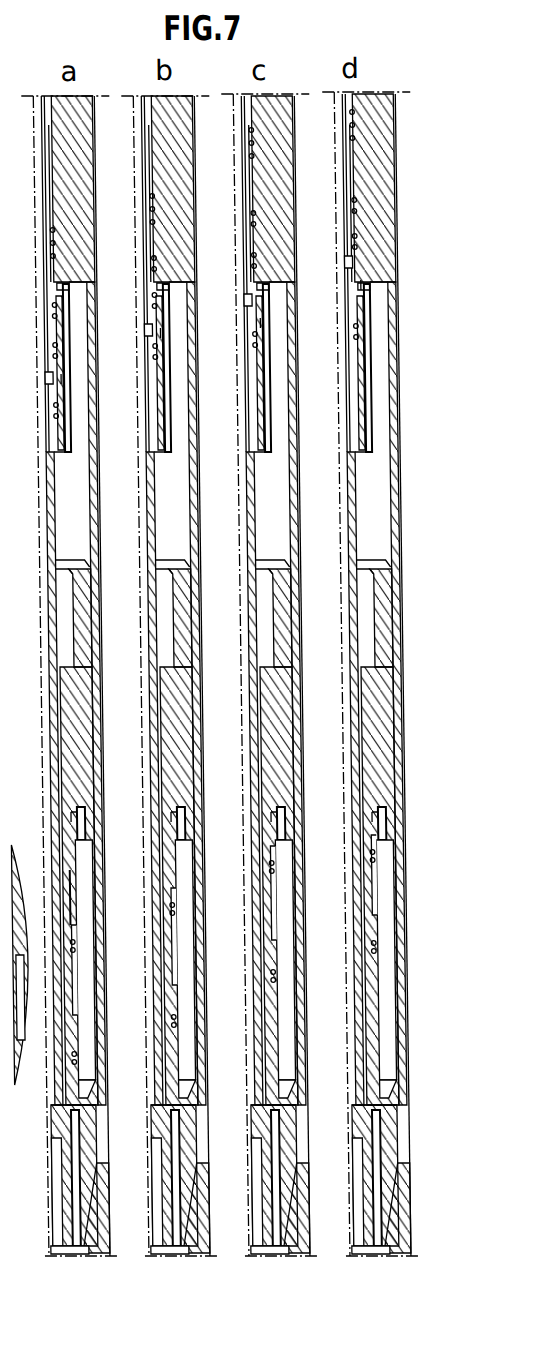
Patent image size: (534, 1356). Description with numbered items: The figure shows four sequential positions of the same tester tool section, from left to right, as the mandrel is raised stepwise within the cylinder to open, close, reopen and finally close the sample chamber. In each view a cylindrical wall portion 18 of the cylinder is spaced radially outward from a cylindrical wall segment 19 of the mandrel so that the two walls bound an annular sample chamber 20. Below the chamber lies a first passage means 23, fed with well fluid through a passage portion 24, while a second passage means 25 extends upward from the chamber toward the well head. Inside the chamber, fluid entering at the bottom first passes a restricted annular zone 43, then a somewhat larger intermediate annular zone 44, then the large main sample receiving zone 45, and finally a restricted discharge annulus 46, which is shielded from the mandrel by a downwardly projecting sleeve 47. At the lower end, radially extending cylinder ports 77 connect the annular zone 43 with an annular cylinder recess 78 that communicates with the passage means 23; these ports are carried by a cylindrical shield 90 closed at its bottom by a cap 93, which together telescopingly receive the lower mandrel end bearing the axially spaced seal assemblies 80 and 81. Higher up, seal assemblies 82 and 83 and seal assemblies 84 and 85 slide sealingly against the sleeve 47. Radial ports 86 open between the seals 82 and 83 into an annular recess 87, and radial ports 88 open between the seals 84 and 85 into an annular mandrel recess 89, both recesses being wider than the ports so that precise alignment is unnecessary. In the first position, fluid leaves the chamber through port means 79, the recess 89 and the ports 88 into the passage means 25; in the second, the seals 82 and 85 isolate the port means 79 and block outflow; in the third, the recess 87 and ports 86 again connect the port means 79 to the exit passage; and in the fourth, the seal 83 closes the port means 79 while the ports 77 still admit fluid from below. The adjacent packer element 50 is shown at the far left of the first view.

In FIG. 7a, the cylindrical wall portion 18 is at (93, 495).
In FIG. 7a, the cylindrical wall segment 19 is at (44, 522).
In FIG. 7a, the sample chamber 20 is at (56, 499).
In FIG. 7b, the sample chamber 20 is at (167, 490).
In FIG. 7c, the sample chamber 20 is at (267, 490).
In FIG. 7d, the sample chamber 20 is at (367, 490).
In FIG. 7a, the first passage means 23 is at (80, 985).
In FIG. 7b, the first passage means 23 is at (200, 960).
In FIG. 7c, the first passage means 23 is at (299, 960).
In FIG. 7d, the first passage means 23 is at (403, 957).
In FIG. 7a, the passage portion 24 is at (60, 1170).
In FIG. 7a, the second passage means 25 is at (38, 118).
In FIG. 7a, the annular zone 43 is at (55, 720).
In FIG. 7b, the annular zone 43 is at (157, 886).
In FIG. 7c, the annular zone 43 is at (294, 886).
In FIG. 7d, the annular zone 43 is at (396, 886).
In FIG. 7a, the intermediate annular zone 44 is at (72, 615).
In FIG. 7b, the intermediate annular zone 44 is at (196, 618).
In FIG. 7c, the intermediate annular zone 44 is at (297, 618).
In FIG. 7d, the intermediate annular zone 44 is at (399, 618).
In FIG. 7a, the main sample receiving zone 45 is at (78, 532).
In FIG. 7b, the main sample receiving zone 45 is at (188, 550).
In FIG. 7c, the main sample receiving zone 45 is at (289, 545).
In FIG. 7d, the main sample receiving zone 45 is at (392, 542).
In FIG. 7a, the discharge annulus 46 is at (87, 410).
In FIG. 7b, the discharge annulus 46 is at (207, 693).
In FIG. 7c, the discharge annulus 46 is at (307, 693).
In FIG. 7d, the discharge annulus 46 is at (411, 693).
In FIG. 7a, the sleeve 47 is at (66, 345).
In FIG. 7b, the sleeve 47 is at (190, 368).
In FIG. 7c, the sleeve 47 is at (285, 368).
In FIG. 7d, the sleeve 47 is at (389, 368).
In FIG. 7a, the packer element 50 is at (0, 1050).
In FIG. 7a, the cylinder ports 77 is at (66, 818).
In FIG. 7b, the cylinder ports 77 is at (198, 808).
In FIG. 7c, the cylinder ports 77 is at (299, 810).
In FIG. 7d, the cylinder ports 77 is at (401, 808).
In FIG. 7a, the annular cylinder recess 78 is at (74, 816).
In FIG. 7a, the port means 79 is at (66, 290).
In FIG. 7b, the port means 79 is at (187, 276).
In FIG. 7c, the port means 79 is at (287, 275).
In FIG. 7d, the port means 79 is at (341, 293).
In FIG. 7a, the seal assembly 80 is at (62, 945).
In FIG. 7b, the seal assembly 80 is at (148, 900).
In FIG. 7c, the seal assembly 80 is at (248, 859).
In FIG. 7d, the seal assembly 80 is at (400, 849).
In FIG. 7a, the seal assembly 81 is at (62, 1058).
In FIG. 7b, the seal assembly 81 is at (149, 1016).
In FIG. 7c, the seal assembly 81 is at (248, 969).
In FIG. 7d, the seal assembly 81 is at (402, 941).
In FIG. 7a, the seal assembly 82 is at (48, 350).
In FIG. 7b, the seal assembly 82 is at (136, 292).
In FIG. 7c, the seal assembly 82 is at (235, 253).
In FIG. 7d, the seal assembly 82 is at (386, 236).
In FIG. 7a, the seal assembly 83 is at (48, 417).
In FIG. 7b, the seal assembly 83 is at (136, 342).
In FIG. 7c, the seal assembly 83 is at (235, 336).
In FIG. 7d, the seal assembly 83 is at (335, 330).
In FIG. 7a, the seal assembly 84 is at (47, 230).
In FIG. 7b, the seal assembly 84 is at (132, 197).
In FIG. 7c, the seal assembly 84 is at (233, 135).
In FIG. 7d, the seal assembly 84 is at (385, 125).
In FIG. 7a, the seal assembly 85 is at (48, 312).
In FIG. 7b, the seal assembly 85 is at (134, 256).
In FIG. 7c, the seal assembly 85 is at (234, 208).
In FIG. 7d, the seal assembly 85 is at (386, 200).
In FIG. 7a, the radial ports 86 is at (40, 380).
In FIG. 7b, the radial ports 86 is at (133, 322).
In FIG. 7c, the radial ports 86 is at (232, 296).
In FIG. 7d, the radial ports 86 is at (381, 258).
In FIG. 7a, the annular recess 87 is at (58, 380).
In FIG. 7b, the annular recess 87 is at (189, 324).
In FIG. 7c, the annular recess 87 is at (289, 314).
In FIG. 7d, the annular recess 87 is at (390, 282).
In FIG. 7a, the radial ports 88 is at (47, 283).
In FIG. 7b, the radial ports 88 is at (138, 334).
In FIG. 7c, the radial ports 88 is at (238, 311).
In FIG. 7d, the radial ports 88 is at (389, 291).
In FIG. 7a, the annular mandrel recess 89 is at (70, 282).
In FIG. 7b, the annular mandrel recess 89 is at (190, 250).
In FIG. 7c, the annular mandrel recess 89 is at (291, 226).
In FIG. 7d, the annular mandrel recess 89 is at (388, 219).
In FIG. 7a, the cylindrical shield 90 is at (60, 888).
In FIG. 7a, the cap 93 is at (64, 1088).
In FIG. 7b, the cap 93 is at (159, 1095).
In FIG. 7c, the cap 93 is at (259, 1098).
In FIG. 7d, the cap 93 is at (358, 1092).